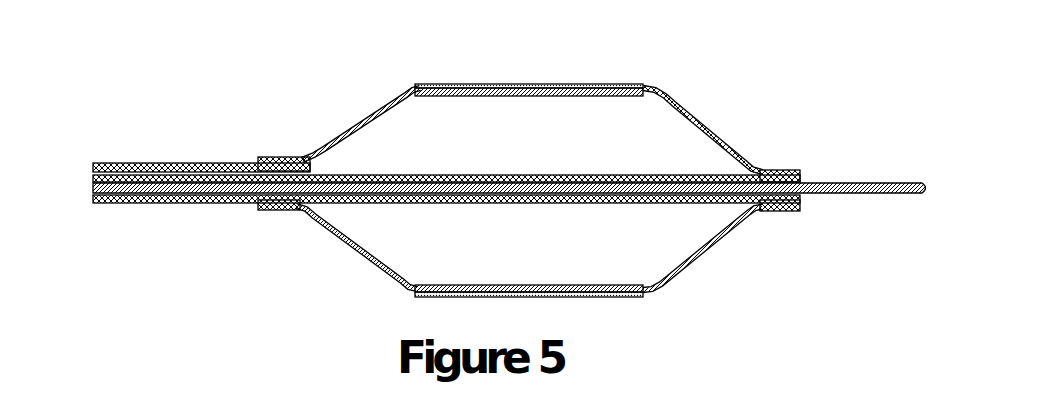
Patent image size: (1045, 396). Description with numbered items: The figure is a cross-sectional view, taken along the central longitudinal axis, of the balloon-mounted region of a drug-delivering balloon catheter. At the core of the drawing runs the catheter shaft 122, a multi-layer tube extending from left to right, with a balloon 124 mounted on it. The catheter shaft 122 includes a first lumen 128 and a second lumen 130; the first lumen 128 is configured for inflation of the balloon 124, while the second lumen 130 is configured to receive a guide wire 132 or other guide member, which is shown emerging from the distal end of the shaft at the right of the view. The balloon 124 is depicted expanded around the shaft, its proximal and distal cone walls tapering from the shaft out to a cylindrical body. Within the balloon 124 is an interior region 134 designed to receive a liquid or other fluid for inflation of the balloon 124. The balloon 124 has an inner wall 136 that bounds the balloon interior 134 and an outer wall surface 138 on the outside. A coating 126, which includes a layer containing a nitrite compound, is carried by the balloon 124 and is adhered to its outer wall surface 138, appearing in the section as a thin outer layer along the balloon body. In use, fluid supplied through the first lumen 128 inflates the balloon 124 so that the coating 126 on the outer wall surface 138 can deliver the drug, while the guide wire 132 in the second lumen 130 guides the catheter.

The catheter shaft 122 is at (165, 203).
The balloon 124 is at (350, 128).
The coating 126 is at (643, 84).
The first lumen 128 is at (86, 170).
The second lumen 130 is at (88, 196).
The guide wire 132 is at (862, 183).
The interior region 134 is at (423, 122).
The inner wall 136 is at (662, 103).
The outer wall surface 138 is at (705, 248).